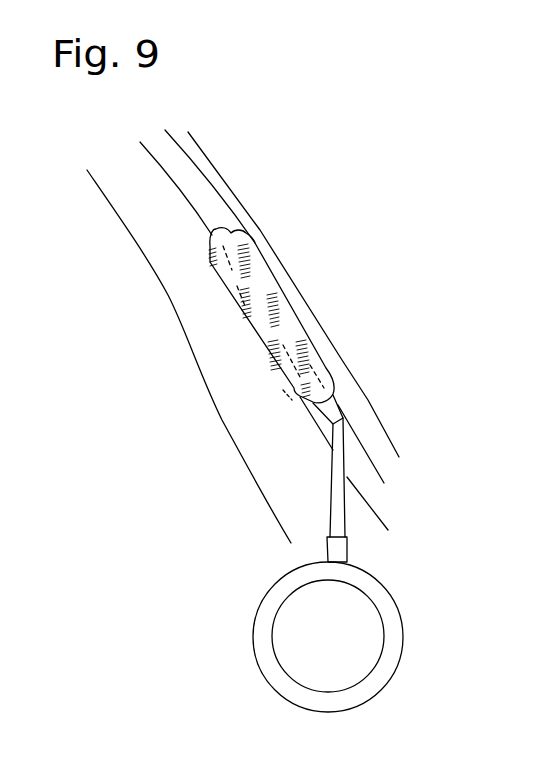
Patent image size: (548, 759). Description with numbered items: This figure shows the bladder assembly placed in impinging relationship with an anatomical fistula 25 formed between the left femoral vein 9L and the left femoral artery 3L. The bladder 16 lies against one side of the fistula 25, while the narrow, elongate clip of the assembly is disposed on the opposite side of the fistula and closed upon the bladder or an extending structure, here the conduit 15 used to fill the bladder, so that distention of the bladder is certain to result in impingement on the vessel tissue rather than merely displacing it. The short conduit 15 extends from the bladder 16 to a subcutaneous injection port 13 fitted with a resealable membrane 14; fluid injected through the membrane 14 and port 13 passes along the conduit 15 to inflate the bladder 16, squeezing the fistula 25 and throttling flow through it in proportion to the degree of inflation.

The left femoral vein 9L is at (168, 295).
The left femoral artery 3L is at (366, 393).
The anatomical fistula 25 is at (263, 283).
The bladder 16 is at (247, 323).
The conduit 15 is at (352, 503).
The subcutaneous injection port 13 is at (250, 645).
The resealable membrane 14 is at (335, 640).